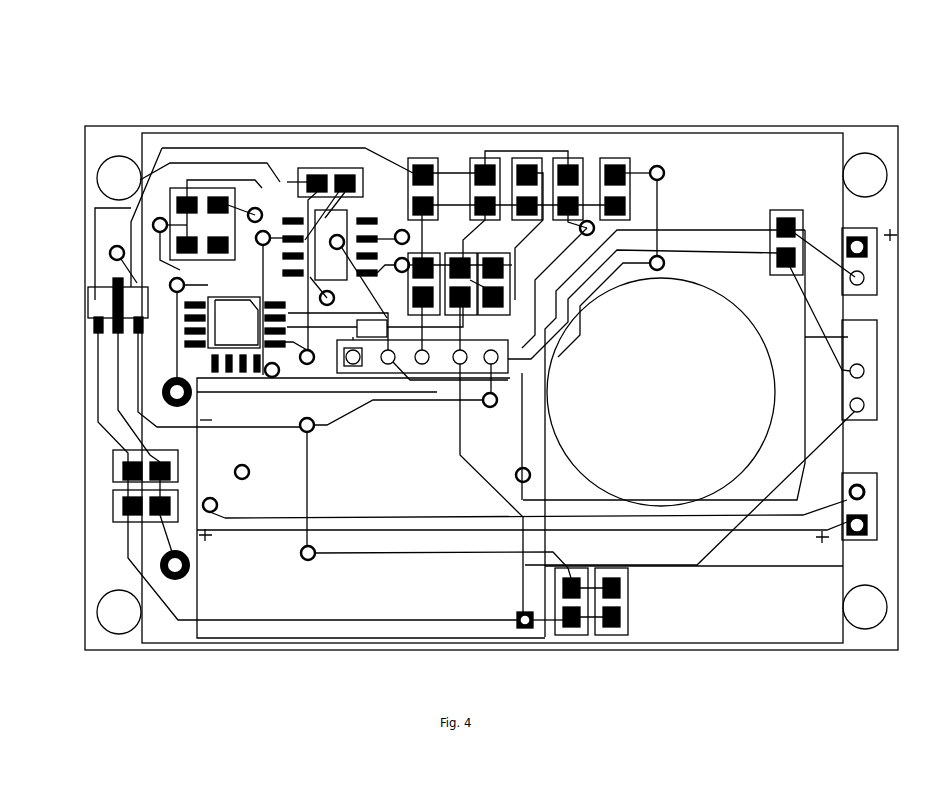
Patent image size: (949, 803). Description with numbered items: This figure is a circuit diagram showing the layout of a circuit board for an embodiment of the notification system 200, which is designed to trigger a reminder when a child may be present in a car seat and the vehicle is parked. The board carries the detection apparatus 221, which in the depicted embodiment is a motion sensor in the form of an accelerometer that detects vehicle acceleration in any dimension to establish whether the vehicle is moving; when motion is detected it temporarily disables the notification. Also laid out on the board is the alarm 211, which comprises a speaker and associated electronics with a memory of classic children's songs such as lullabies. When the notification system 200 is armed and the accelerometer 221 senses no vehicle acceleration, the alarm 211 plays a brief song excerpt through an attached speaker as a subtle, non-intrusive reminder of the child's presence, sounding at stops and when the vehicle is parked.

The notification system 200 is at (916, 90).
The motion sensor 221 is at (212, 347).
The alarm 211 is at (355, 507).